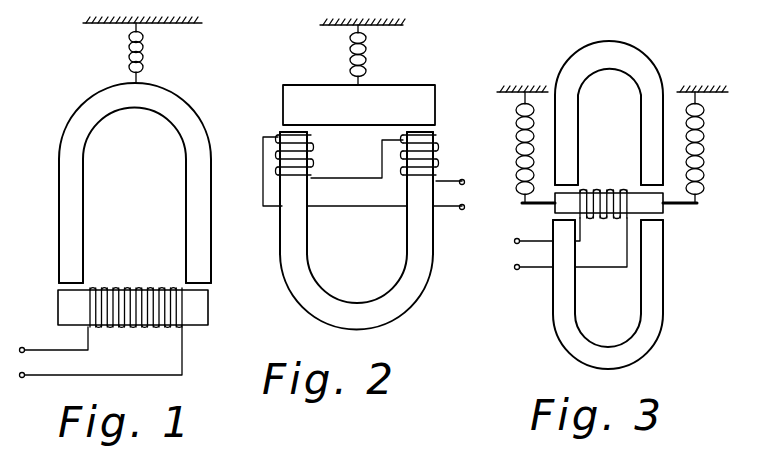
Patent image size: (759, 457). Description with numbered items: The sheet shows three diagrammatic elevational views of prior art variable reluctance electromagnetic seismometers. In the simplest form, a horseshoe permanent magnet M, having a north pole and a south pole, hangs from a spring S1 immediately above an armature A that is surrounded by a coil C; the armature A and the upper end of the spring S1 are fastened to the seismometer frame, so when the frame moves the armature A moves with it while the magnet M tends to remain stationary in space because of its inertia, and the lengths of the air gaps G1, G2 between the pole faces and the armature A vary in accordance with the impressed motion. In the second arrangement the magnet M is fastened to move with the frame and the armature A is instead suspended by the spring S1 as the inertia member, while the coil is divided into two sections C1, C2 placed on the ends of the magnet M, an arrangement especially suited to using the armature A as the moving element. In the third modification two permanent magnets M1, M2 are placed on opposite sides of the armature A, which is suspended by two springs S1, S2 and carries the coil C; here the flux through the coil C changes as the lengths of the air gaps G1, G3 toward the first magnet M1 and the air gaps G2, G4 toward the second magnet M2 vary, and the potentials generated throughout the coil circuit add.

In FIG. 1, the spring S1 is at (143, 62).
In FIG. 2, the spring S1 is at (350, 59).
In FIG. 3, the spring S1 is at (517, 147).
In FIG. 3, the spring S2 is at (710, 135).
In FIG. 1, the permanent magnet M is at (182, 107).
In FIG. 2, the permanent magnet M is at (328, 305).
In FIG. 3, the permanent magnet M1 is at (570, 80).
In FIG. 3, the permanent magnet M2 is at (647, 323).
In FIG. 1, the armature A is at (192, 317).
In FIG. 2, the armature A is at (408, 100).
In FIG. 3, the armature A is at (650, 203).
In FIG. 1, the coil C is at (153, 328).
In FIG. 3, the coil C is at (615, 218).
In FIG. 2, the coil section C1 is at (309, 163).
In FIG. 2, the coil section C2 is at (438, 165).
In FIG. 1, the air gap G1 is at (70, 287).
In FIG. 2, the air gap G1 is at (290, 127).
In FIG. 3, the air gap G1 is at (575, 189).
In FIG. 1, the air gap G2 is at (200, 286).
In FIG. 2, the air gap G2 is at (436, 131).
In FIG. 3, the air gap G2 is at (553, 219).
In FIG. 3, the air gap G3 is at (643, 189).
In FIG. 3, the air gap G4 is at (660, 220).